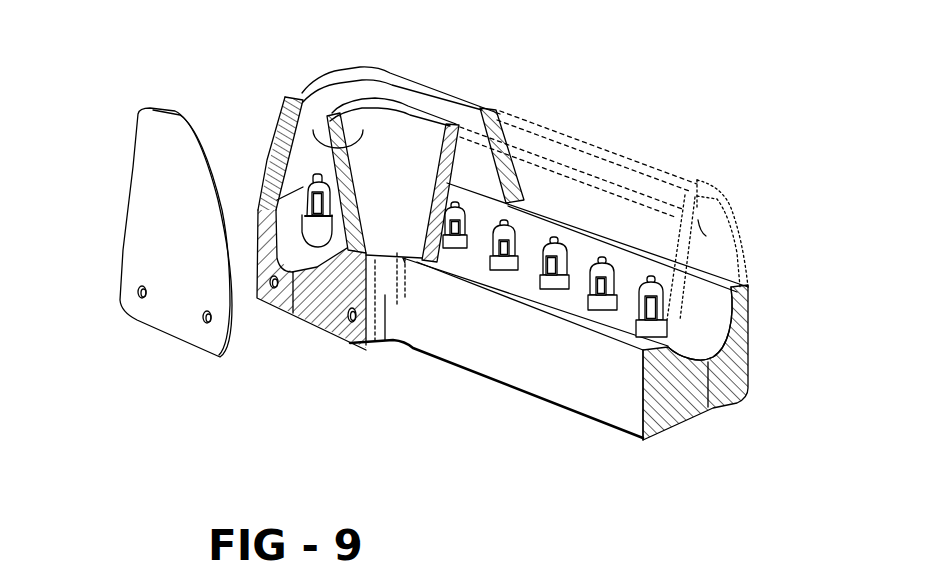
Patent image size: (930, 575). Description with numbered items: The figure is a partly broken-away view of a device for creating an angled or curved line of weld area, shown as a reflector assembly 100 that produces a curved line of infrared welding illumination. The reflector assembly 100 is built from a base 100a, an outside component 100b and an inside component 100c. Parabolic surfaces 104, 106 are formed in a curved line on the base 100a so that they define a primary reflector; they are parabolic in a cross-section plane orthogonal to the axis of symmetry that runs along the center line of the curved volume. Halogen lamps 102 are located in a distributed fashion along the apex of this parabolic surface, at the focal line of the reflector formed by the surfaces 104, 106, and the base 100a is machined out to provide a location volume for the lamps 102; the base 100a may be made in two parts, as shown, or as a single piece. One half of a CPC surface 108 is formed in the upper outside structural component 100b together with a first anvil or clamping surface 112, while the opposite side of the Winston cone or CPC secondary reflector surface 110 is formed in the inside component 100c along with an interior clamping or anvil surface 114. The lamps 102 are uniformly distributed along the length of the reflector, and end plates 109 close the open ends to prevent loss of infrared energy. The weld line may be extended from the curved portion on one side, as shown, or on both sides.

The reflector assembly 100 is at (469, 94).
The base 100a is at (445, 340).
The outside component 100b is at (273, 133).
The inside component 100c is at (351, 133).
The halogen lamps 102 is at (645, 320).
The parabolic surface 104 is at (748, 330).
The parabolic surface 106 is at (692, 357).
The CPC surface 108 is at (697, 178).
The end plates 109 is at (143, 172).
The CPC secondary reflector surface 110 is at (354, 133).
The first anvil or clamping surface 112 is at (320, 85).
The interior clamping or anvil surface 114 is at (420, 120).